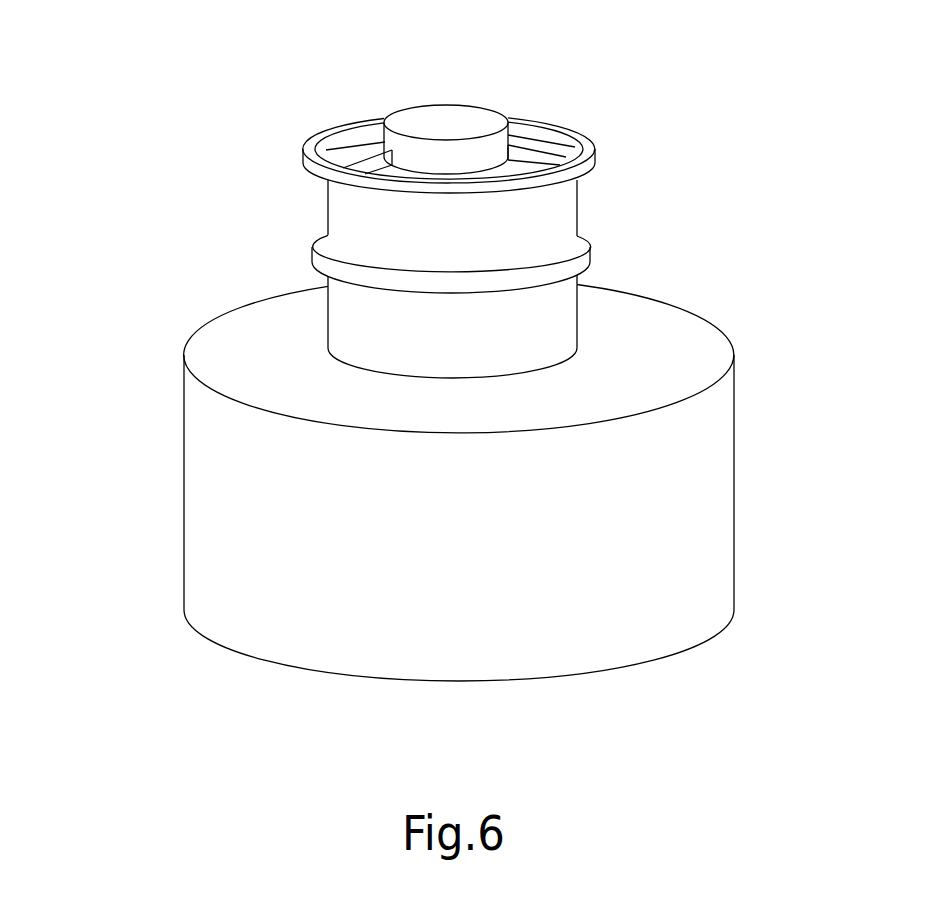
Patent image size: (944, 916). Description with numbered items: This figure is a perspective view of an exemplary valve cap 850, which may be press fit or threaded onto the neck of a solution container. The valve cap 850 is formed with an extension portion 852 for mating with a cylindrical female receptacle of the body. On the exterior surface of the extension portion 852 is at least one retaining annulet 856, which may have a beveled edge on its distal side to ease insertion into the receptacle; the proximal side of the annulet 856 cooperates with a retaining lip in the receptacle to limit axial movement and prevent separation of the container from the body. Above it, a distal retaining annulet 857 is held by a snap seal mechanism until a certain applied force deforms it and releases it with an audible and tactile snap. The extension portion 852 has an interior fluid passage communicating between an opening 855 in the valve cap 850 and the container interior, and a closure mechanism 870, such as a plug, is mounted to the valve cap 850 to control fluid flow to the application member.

The valve cap 850 is at (147, 207).
The extension portion 852 is at (518, 322).
The opening 855 is at (518, 172).
The retaining annulet 856 is at (586, 250).
The distal retaining annulet 857 is at (592, 158).
The closure mechanism 870 is at (417, 107).